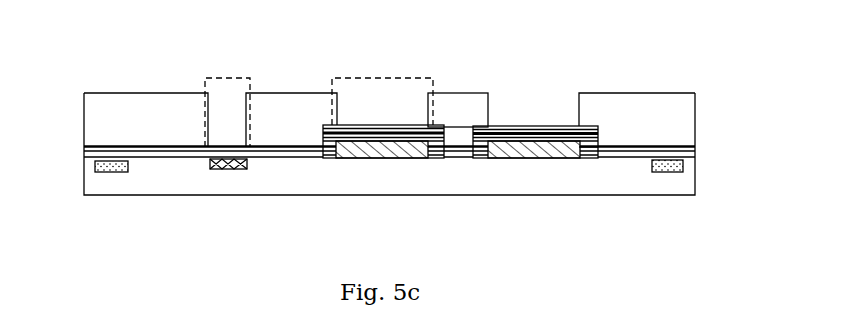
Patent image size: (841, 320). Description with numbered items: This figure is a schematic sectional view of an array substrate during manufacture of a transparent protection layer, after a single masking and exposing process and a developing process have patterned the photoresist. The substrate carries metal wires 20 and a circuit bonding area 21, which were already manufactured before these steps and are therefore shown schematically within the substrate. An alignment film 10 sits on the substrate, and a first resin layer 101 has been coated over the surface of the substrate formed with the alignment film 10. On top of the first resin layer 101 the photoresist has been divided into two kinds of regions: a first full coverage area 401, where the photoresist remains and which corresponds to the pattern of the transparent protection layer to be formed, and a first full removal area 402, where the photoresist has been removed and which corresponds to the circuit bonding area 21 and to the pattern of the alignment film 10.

The first full coverage area of the photoresist 401 is at (130, 113).
The first full removal area of the photoresist 402 is at (222, 100).
The metal wire 20 is at (100, 165).
The circuit bonding area 21 is at (220, 168).
The first resin layer 101 is at (290, 153).
The alignment film 10 is at (535, 148).